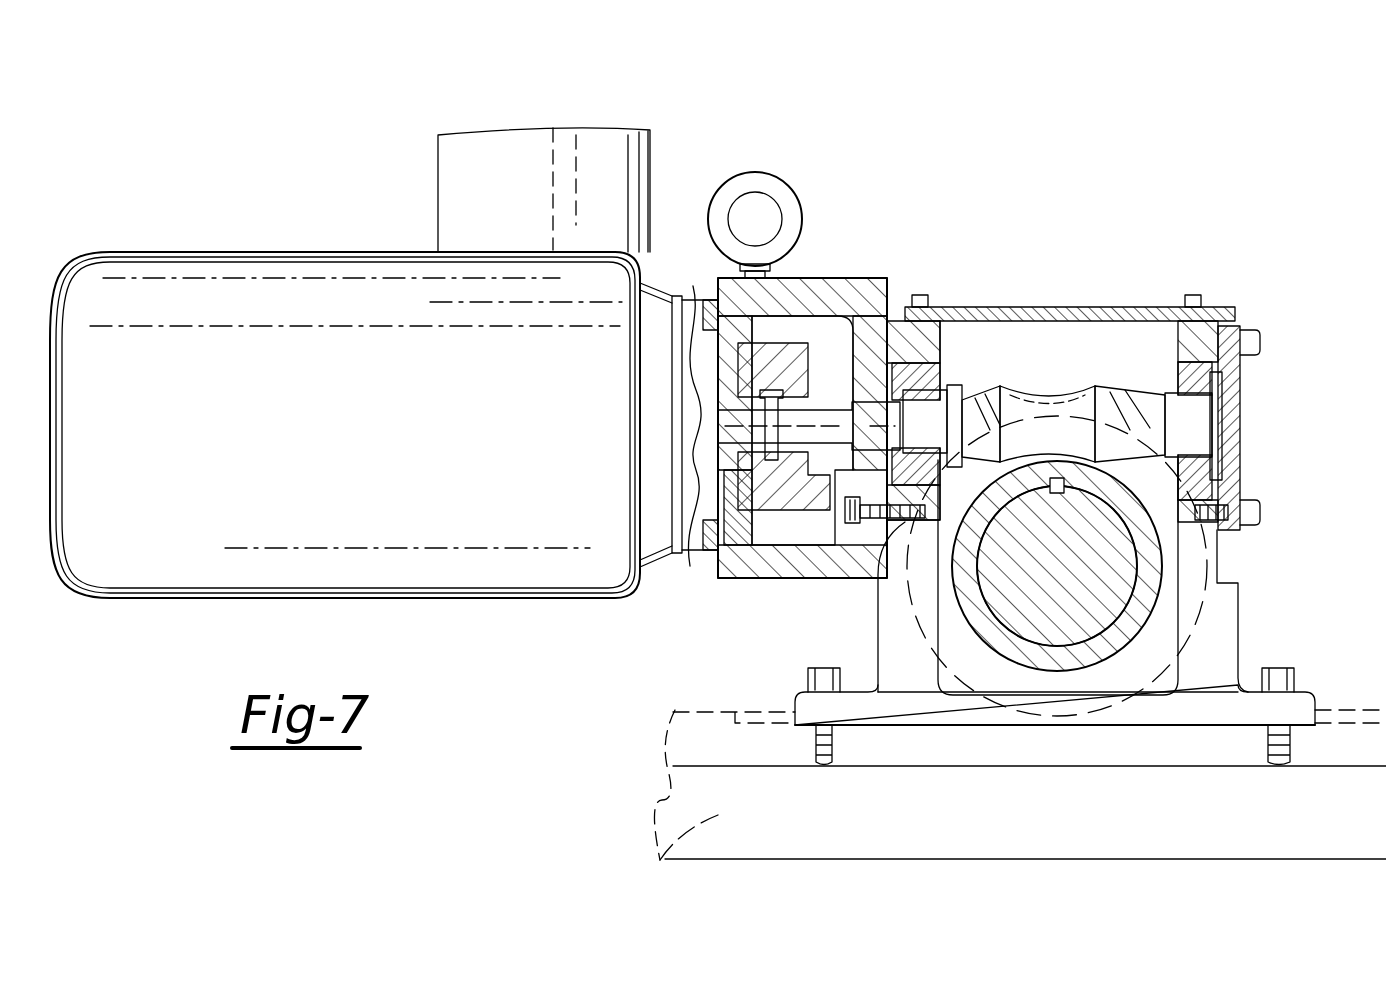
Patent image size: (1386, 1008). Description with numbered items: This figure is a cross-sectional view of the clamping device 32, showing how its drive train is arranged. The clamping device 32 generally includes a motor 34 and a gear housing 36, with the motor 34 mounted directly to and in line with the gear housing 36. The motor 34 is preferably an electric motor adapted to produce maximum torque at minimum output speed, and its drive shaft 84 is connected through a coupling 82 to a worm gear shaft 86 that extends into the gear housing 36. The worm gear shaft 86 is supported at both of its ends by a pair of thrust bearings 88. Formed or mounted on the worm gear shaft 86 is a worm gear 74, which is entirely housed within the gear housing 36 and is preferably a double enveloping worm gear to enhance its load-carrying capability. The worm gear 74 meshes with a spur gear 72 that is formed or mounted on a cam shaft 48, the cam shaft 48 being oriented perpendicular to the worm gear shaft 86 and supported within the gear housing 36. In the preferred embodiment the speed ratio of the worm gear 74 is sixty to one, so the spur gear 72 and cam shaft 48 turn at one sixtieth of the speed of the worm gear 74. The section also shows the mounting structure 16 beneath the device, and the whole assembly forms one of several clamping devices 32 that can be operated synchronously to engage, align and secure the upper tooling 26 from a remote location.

The clamping device 32 is at (345, 114).
The motor 34 is at (190, 292).
The coupling 82 is at (790, 358).
The drive shaft 84 is at (742, 485).
The worm gear shaft 86 is at (935, 412).
The worm gear 74 is at (1055, 408).
The gear housing 36 is at (1271, 343).
The thrust bearings 88 is at (1205, 378).
The cam shaft 48 is at (1115, 578).
The spur gear 72 is at (1130, 637).
The base plate 16 is at (735, 752).
The upper tooling 26 is at (660, 862).